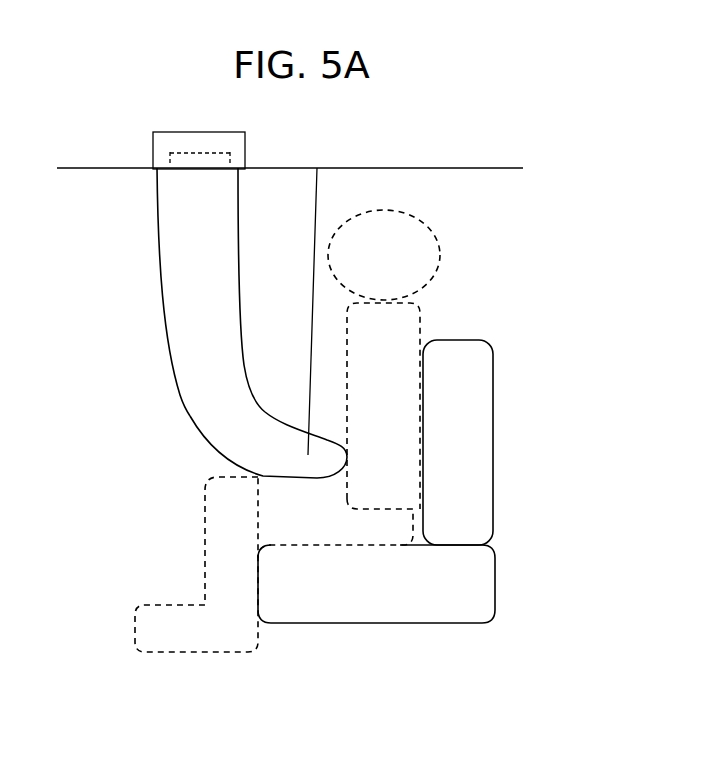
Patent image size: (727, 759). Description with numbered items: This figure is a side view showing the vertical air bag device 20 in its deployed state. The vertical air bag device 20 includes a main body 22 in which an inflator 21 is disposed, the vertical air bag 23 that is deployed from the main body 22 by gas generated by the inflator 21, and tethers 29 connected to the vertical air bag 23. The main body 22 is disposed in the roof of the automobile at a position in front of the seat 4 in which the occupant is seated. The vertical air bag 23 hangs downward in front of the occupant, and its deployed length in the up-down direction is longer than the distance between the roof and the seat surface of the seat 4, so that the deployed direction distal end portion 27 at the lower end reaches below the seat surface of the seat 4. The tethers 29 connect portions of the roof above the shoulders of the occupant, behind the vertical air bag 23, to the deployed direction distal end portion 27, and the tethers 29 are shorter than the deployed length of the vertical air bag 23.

The seat 4 is at (463, 578).
The vertical air bag device 20 is at (108, 385).
The inflator 21 is at (178, 163).
The main body 22 is at (153, 138).
The vertical air bag 23 is at (180, 312).
The deployed direction distal end portion 27 is at (322, 465).
The tethers 29 is at (318, 200).